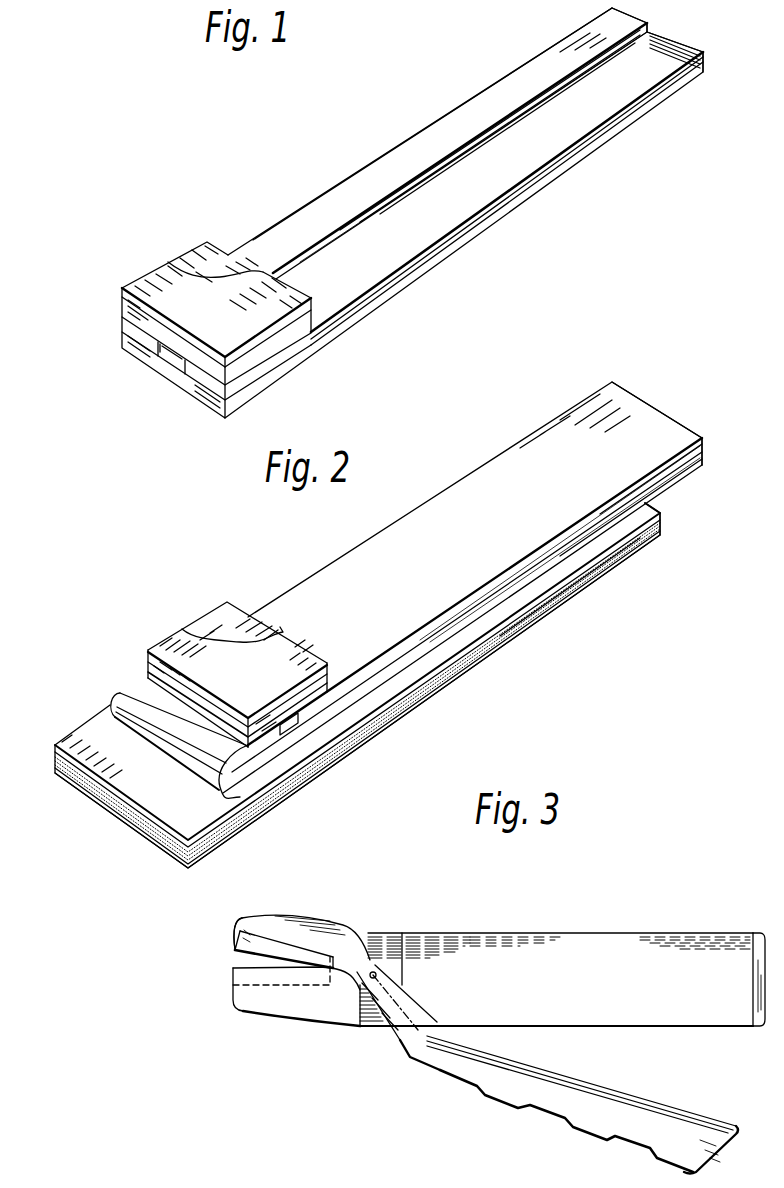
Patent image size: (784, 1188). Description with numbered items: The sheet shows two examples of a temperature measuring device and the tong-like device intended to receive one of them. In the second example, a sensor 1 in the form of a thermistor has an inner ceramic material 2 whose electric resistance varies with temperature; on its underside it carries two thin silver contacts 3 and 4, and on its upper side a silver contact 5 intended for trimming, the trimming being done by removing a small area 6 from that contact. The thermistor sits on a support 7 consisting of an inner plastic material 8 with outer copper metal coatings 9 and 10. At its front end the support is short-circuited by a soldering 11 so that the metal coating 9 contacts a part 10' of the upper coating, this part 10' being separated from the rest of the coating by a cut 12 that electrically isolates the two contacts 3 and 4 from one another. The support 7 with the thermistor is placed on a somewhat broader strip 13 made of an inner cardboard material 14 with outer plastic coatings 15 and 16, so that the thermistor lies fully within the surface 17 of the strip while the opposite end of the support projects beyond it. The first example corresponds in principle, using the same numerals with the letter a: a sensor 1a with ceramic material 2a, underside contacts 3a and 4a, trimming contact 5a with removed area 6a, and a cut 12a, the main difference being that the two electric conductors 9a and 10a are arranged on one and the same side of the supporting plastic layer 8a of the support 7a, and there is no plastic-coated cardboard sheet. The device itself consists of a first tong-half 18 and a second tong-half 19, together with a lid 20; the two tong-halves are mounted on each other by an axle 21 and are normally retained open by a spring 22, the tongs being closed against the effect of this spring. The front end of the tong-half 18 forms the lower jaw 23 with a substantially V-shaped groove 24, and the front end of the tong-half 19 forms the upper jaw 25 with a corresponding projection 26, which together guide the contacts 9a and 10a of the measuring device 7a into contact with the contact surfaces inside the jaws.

In FIG. 1, the sensor 1a is at (136, 266).
In FIG. 1, the inner ceramic material 2a is at (265, 350).
In FIG. 1, the contact 3a is at (122, 322).
In FIG. 1, the contact 4a is at (205, 380).
In FIG. 1, the silver contact 5a is at (265, 298).
In FIG. 1, the small area 6a is at (214, 262).
In FIG. 1, the support 7a is at (400, 128).
In FIG. 1, the inner plastic material 8a is at (505, 210).
In FIG. 1, the metal coating 9a is at (517, 78).
In FIG. 1, the metal coating 10a is at (680, 52).
In FIG. 1, the cut 12a is at (168, 360).
In FIG. 2, the sensor 1 is at (164, 618).
In FIG. 2, the inner ceramic material 2 is at (150, 668).
In FIG. 2, the contact 3 is at (305, 698).
In FIG. 2, the contact 4 is at (280, 768).
In FIG. 2, the silver contact 5 is at (270, 652).
In FIG. 2, the small area 6 is at (222, 622).
In FIG. 2, the support 7 is at (481, 453).
In FIG. 2, the inner plastic material 8 is at (690, 462).
In FIG. 2, the metal coating 9 is at (684, 478).
In FIG. 2, the metal coating 10 is at (676, 423).
In FIG. 2, the part of the upper layer 10' is at (250, 809).
In FIG. 2, the soldering 11 is at (122, 702).
In FIG. 2, the cut 12 is at (287, 727).
In FIG. 2, the strip 13 is at (72, 714).
In FIG. 2, the inner cardboard material 14 is at (558, 594).
In FIG. 2, the plastic coating 15 is at (648, 540).
In FIG. 2, the plastic coating 16 is at (605, 566).
In FIG. 2, the surface 17 is at (142, 788).
In FIG. 3, the first tong-half 18 is at (568, 940).
In FIG. 3, the second tong-half 19 is at (578, 1090).
In FIG. 3, the lid 20 is at (762, 933).
In FIG. 3, the axle 21 is at (373, 972).
In FIG. 3, the spring 22 is at (403, 1020).
In FIG. 3, the lower jaw 23 is at (305, 1005).
In FIG. 3, the V-shaped groove 24 is at (258, 987).
In FIG. 3, the upper jaw 25 is at (288, 933).
In FIG. 3, the projection 26 is at (252, 936).